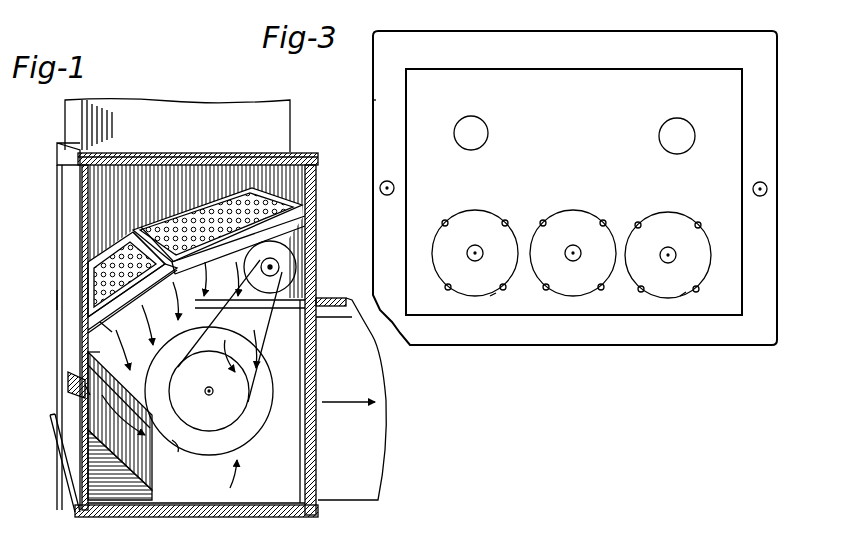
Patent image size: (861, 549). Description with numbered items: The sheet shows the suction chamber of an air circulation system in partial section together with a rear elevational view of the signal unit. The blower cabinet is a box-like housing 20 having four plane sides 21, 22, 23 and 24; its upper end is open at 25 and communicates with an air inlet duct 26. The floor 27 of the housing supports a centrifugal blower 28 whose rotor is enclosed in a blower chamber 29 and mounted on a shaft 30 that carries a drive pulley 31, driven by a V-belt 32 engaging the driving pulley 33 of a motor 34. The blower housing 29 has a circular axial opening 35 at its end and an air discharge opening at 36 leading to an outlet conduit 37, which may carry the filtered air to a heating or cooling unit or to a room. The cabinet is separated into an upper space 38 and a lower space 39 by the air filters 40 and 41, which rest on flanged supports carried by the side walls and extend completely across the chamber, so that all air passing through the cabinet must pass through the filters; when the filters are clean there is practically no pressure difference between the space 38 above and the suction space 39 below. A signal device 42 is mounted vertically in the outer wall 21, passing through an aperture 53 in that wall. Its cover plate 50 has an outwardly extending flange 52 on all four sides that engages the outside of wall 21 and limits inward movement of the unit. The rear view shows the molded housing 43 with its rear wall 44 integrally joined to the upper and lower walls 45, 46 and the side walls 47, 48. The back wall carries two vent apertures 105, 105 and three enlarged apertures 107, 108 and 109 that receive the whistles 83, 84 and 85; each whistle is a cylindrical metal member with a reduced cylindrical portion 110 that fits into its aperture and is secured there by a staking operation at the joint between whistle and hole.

In FIG. 1, the box-like housing 20 is at (62, 191).
In FIG. 1, the plane side 21 is at (62, 300).
In FIG. 1, the plane side 22 is at (314, 194).
In FIG. 1, the plane side 23 is at (95, 185).
In FIG. 1, the plane side 24 is at (102, 500).
In FIG. 1, the open upper end 25 is at (205, 160).
In FIG. 1, the air inlet duct 26 is at (166, 108).
In FIG. 1, the bottom plate 27 is at (128, 505).
In FIG. 1, the centrifugal blower 28 is at (222, 505).
In FIG. 1, the blower chamber 29 is at (88, 352).
In FIG. 1, the shaft 30 is at (220, 379).
In FIG. 1, the drive pulley 31 is at (226, 424).
In FIG. 1, the V-belt 32 is at (262, 352).
In FIG. 1, the driving pulley 33 is at (280, 268).
In FIG. 1, the motor 34 is at (292, 250).
In FIG. 1, the circular axial opening 35 is at (176, 447).
In FIG. 1, the air discharge opening 36 is at (300, 432).
In FIG. 1, the outlet conduit 37 is at (370, 425).
In FIG. 1, the upper space 38 is at (96, 212).
In FIG. 1, the lower space 39 is at (102, 335).
In FIG. 1, the air filter 40 is at (115, 255).
In FIG. 1, the air filter 41 is at (138, 236).
In FIG. 1, the signal device 42 is at (67, 381).
In FIG. 3, the signal device 42 is at (640, 347).
In FIG. 3, the housing 43 is at (606, 316).
In FIG. 3, the rear wall 44 is at (742, 125).
In FIG. 3, the upper wall 45 is at (646, 69).
In FIG. 3, the lower wall 46 is at (698, 317).
In FIG. 3, the side wall 47 is at (742, 258).
In FIG. 3, the side wall 48 is at (406, 237).
In FIG. 3, the cover plate 50 is at (458, 346).
In FIG. 3, the flange 52 is at (378, 100).
In FIG. 1, the aperture 53 is at (86, 390).
In FIG. 3, the whistle 83 is at (482, 216).
In FIG. 3, the whistle 84 is at (580, 216).
In FIG. 3, the whistle 85 is at (672, 218).
In FIG. 3, the vent aperture 105 is at (486, 128).
In FIG. 3, the enlarged aperture 107 is at (455, 218).
In FIG. 3, the enlarged aperture 108 is at (556, 218).
In FIG. 3, the enlarged aperture 109 is at (656, 220).
In FIG. 3, the reduced cylindrical portion 110 is at (494, 295).